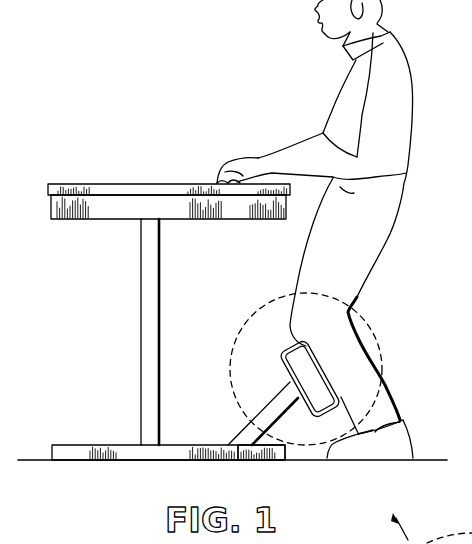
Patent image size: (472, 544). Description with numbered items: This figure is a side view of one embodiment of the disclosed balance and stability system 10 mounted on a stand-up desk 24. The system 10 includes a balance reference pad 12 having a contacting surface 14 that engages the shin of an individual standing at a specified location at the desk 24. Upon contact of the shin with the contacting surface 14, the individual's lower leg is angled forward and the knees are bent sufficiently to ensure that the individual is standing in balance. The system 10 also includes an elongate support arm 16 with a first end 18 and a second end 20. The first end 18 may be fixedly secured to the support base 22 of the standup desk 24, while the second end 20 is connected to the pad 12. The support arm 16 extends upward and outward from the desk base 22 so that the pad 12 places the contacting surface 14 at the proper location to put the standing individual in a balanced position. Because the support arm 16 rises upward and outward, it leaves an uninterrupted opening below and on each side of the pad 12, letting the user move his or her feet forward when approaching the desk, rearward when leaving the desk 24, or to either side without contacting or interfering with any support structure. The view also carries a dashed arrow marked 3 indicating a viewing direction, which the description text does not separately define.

The balance and stability system 10 is at (222, 336).
The balance reference pad 12 is at (280, 343).
The contacting surface 14 is at (327, 370).
The elongate support arm 16 is at (245, 428).
The first end 18 is at (239, 460).
The second end 20 is at (290, 382).
The support base 22 is at (285, 453).
The standup desk 24 is at (147, 328).
The view direction of FIG. 3 is at (395, 363).